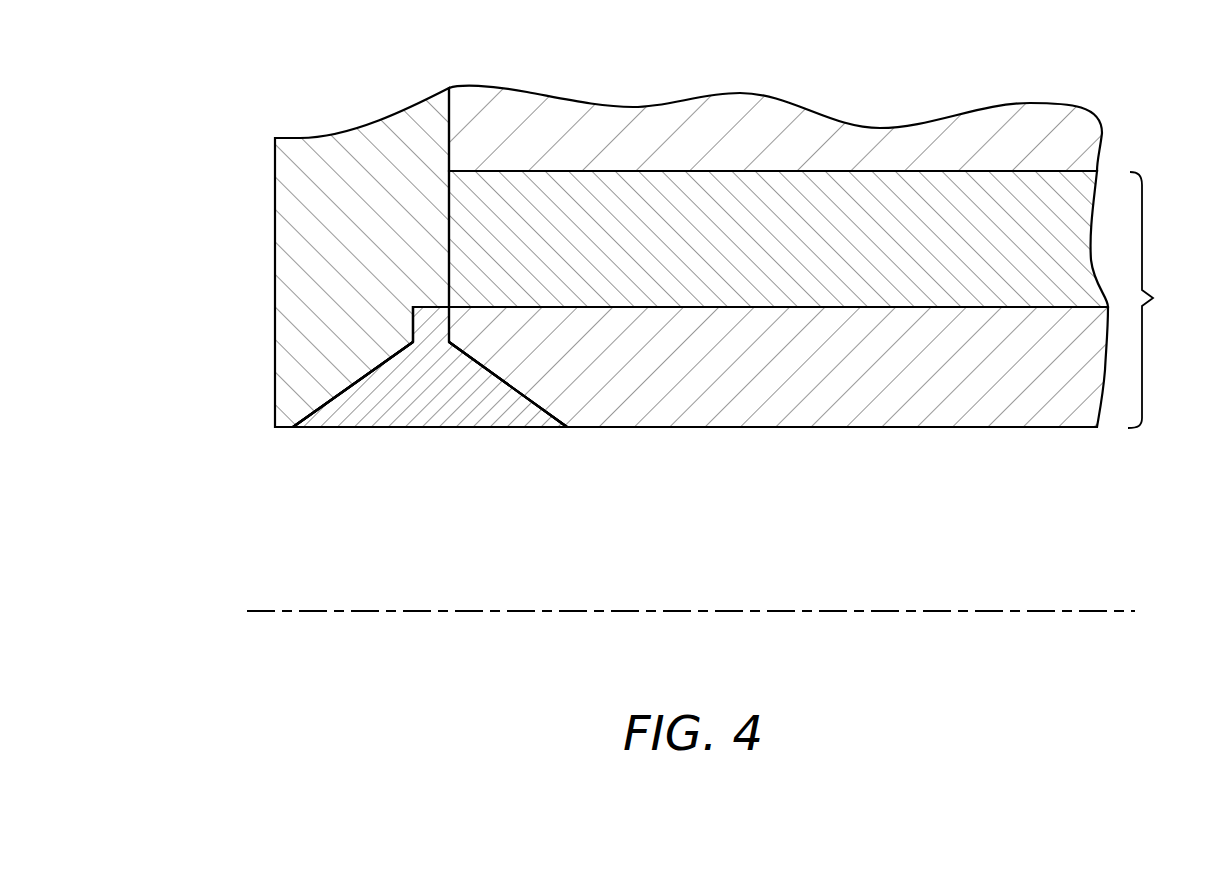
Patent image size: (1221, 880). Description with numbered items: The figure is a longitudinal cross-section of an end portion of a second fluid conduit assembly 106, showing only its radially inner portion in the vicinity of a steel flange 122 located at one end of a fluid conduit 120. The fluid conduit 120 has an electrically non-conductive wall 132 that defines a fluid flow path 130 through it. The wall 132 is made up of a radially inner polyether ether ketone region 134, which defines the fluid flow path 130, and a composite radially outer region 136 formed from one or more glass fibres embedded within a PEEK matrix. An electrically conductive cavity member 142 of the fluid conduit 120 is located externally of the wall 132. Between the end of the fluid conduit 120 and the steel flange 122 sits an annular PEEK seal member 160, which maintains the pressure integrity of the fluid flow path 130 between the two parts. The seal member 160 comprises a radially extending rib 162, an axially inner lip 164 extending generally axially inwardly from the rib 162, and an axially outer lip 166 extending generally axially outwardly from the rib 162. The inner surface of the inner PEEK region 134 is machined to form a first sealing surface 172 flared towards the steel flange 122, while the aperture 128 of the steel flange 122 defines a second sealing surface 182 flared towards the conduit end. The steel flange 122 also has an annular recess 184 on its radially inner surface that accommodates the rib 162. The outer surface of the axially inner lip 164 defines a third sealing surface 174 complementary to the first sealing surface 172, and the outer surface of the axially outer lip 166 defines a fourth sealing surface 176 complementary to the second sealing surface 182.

The second fluid conduit assembly 106 is at (464, 646).
The fluid conduit 120 is at (816, 548).
The steel flange 122 is at (292, 208).
The aperture 128 is at (280, 565).
The fluid flow path 130 is at (715, 668).
The wall 132 is at (1163, 300).
The radially inner polyether ether ketone (PEEK) region 134 is at (885, 400).
The composite radially outer region 136 is at (938, 198).
The electrically conductive cavity member 142 is at (743, 118).
The seal member 160 is at (433, 404).
The radially extending rib 162 is at (371, 210).
The axially inner lip 164 is at (517, 407).
The axially outer lip 166 is at (350, 407).
The first sealing surface 172 is at (529, 235).
The third sealing surface 174 is at (495, 372).
The fourth sealing surface 176 is at (284, 372).
The second sealing surface 182 is at (350, 382).
The annular recess 184 is at (432, 315).